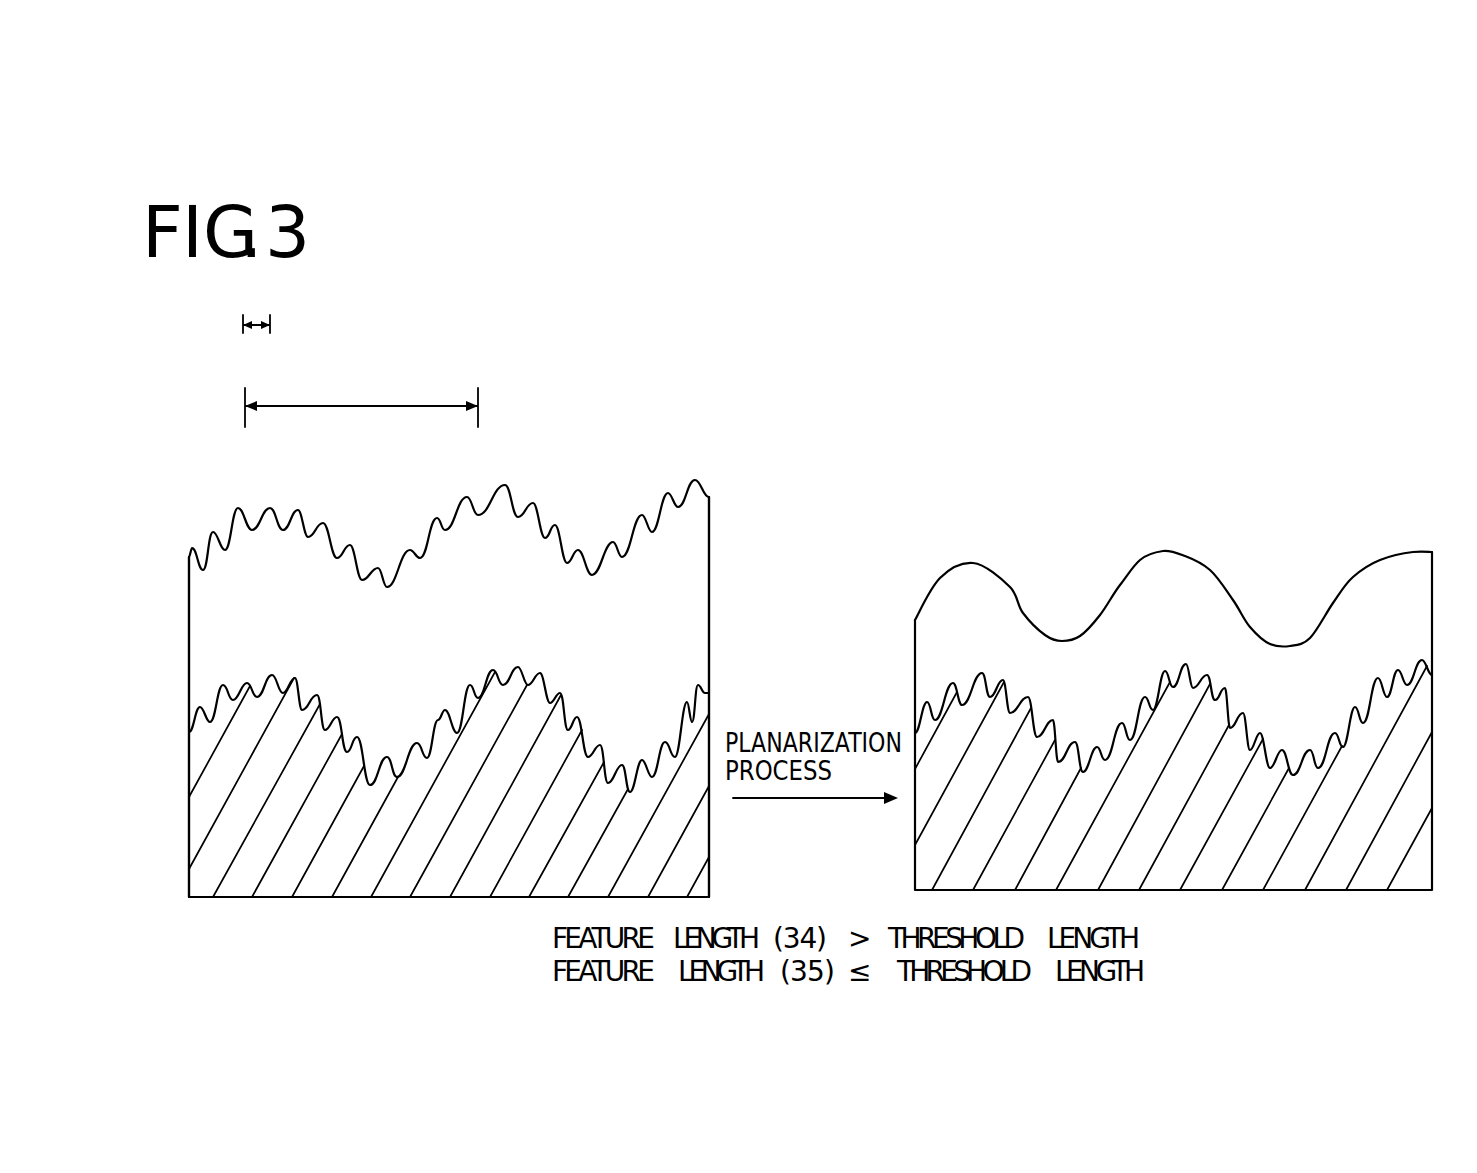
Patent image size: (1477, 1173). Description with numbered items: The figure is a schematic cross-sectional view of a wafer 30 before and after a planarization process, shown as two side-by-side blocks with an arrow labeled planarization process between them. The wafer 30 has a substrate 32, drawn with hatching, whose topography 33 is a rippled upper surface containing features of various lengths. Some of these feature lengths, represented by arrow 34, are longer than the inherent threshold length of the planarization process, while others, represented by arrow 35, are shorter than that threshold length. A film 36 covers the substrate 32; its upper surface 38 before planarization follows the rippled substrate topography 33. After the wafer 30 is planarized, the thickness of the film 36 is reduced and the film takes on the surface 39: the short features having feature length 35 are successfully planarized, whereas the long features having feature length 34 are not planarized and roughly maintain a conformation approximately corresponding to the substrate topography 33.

The wafer 30 is at (182, 522).
The substrate 32 is at (215, 854).
The topography 33 is at (302, 690).
The arrow 34 is at (342, 406).
The arrow 35 is at (256, 320).
The film 36 is at (215, 644).
The layer surface before planarization 38 is at (305, 520).
The planarized layer surface 39 is at (1007, 578).